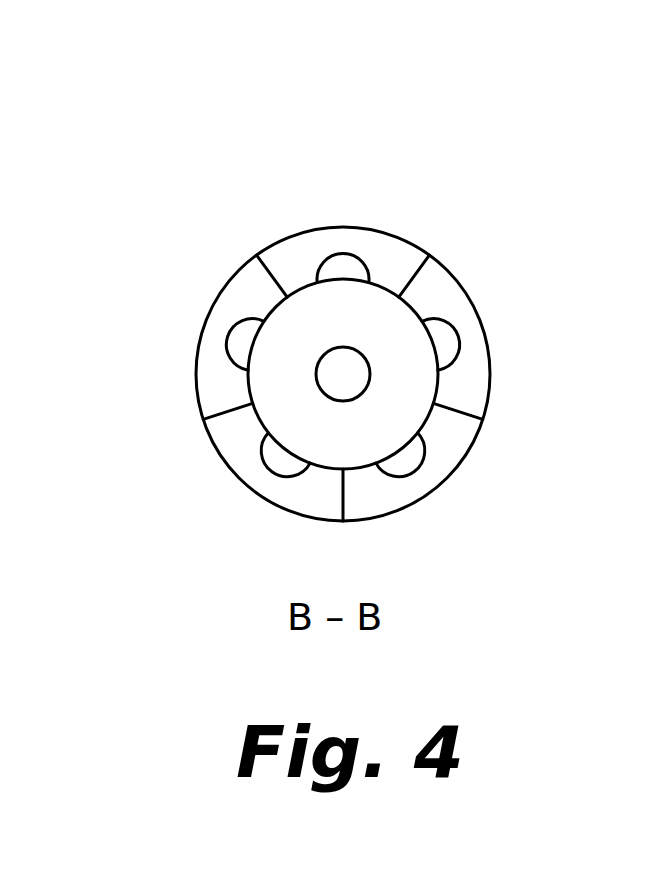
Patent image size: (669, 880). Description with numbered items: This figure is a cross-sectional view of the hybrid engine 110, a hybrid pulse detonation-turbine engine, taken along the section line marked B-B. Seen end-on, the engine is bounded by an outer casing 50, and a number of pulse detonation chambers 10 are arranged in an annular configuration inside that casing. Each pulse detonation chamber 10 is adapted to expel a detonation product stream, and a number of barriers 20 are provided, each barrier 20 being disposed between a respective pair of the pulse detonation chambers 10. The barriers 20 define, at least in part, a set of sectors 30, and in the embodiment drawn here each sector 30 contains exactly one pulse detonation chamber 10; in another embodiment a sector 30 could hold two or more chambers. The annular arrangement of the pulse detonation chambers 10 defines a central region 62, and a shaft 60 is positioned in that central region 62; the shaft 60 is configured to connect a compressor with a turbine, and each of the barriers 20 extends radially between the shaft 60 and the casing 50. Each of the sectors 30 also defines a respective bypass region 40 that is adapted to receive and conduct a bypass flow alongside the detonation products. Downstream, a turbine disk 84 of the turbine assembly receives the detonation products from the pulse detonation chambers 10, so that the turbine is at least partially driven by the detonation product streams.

The pulse detonation chamber 10 is at (414, 472).
The barrier 20 is at (275, 280).
The sector 30 is at (125, 260).
The bypass region 40 is at (233, 433).
The casing 50 is at (491, 379).
The shaft 60 is at (342, 373).
The central region 62 is at (340, 427).
The turbine disk 84 is at (392, 325).
The hybrid engine 110 is at (628, 80).